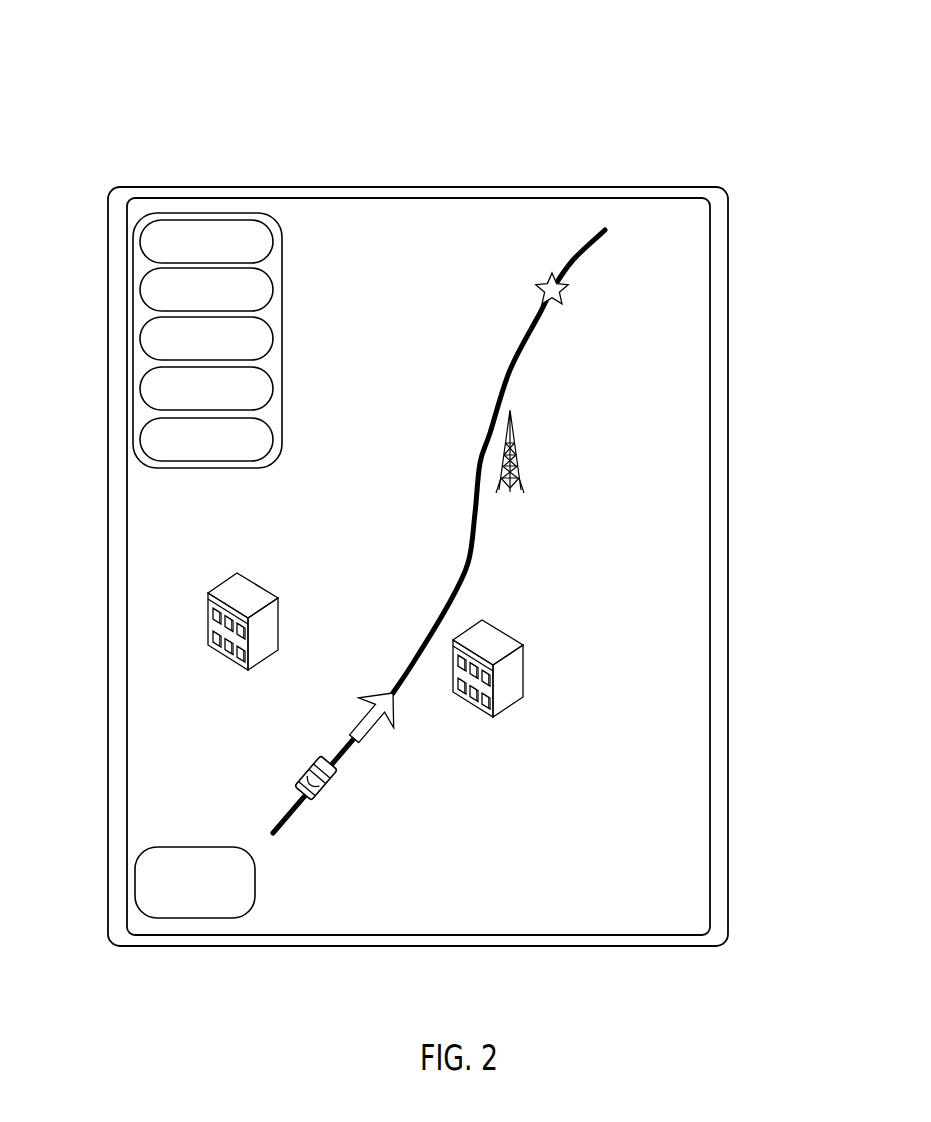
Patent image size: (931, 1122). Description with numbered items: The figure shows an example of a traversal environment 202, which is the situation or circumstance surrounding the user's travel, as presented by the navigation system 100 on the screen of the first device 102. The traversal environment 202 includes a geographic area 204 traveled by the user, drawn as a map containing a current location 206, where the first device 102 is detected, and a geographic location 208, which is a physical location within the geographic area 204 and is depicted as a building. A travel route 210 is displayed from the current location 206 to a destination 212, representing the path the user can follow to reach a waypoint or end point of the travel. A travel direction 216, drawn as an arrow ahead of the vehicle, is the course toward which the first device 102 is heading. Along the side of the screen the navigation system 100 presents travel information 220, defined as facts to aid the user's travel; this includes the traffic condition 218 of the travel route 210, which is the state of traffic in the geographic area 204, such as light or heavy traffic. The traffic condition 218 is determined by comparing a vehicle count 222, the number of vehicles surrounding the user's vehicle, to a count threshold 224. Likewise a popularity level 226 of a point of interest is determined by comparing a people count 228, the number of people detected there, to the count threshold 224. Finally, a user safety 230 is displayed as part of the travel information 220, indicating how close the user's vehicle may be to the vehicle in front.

The navigation system 100 is at (144, 50).
The first device 102 is at (578, 180).
The traversal environment 202 is at (187, 186).
The geographic area 204 is at (650, 278).
The current location 206 is at (317, 790).
The geographic location 208 is at (233, 597).
The travel route 210 is at (575, 263).
The destination 212 is at (560, 297).
The travel direction 216 is at (362, 733).
The traffic condition 218 is at (257, 233).
The travel information 220 is at (137, 248).
The vehicle count 222 is at (157, 292).
The count threshold 224 is at (158, 443).
The popularity level 226 is at (162, 340).
The people count 228 is at (158, 392).
The user safety 230 is at (150, 890).